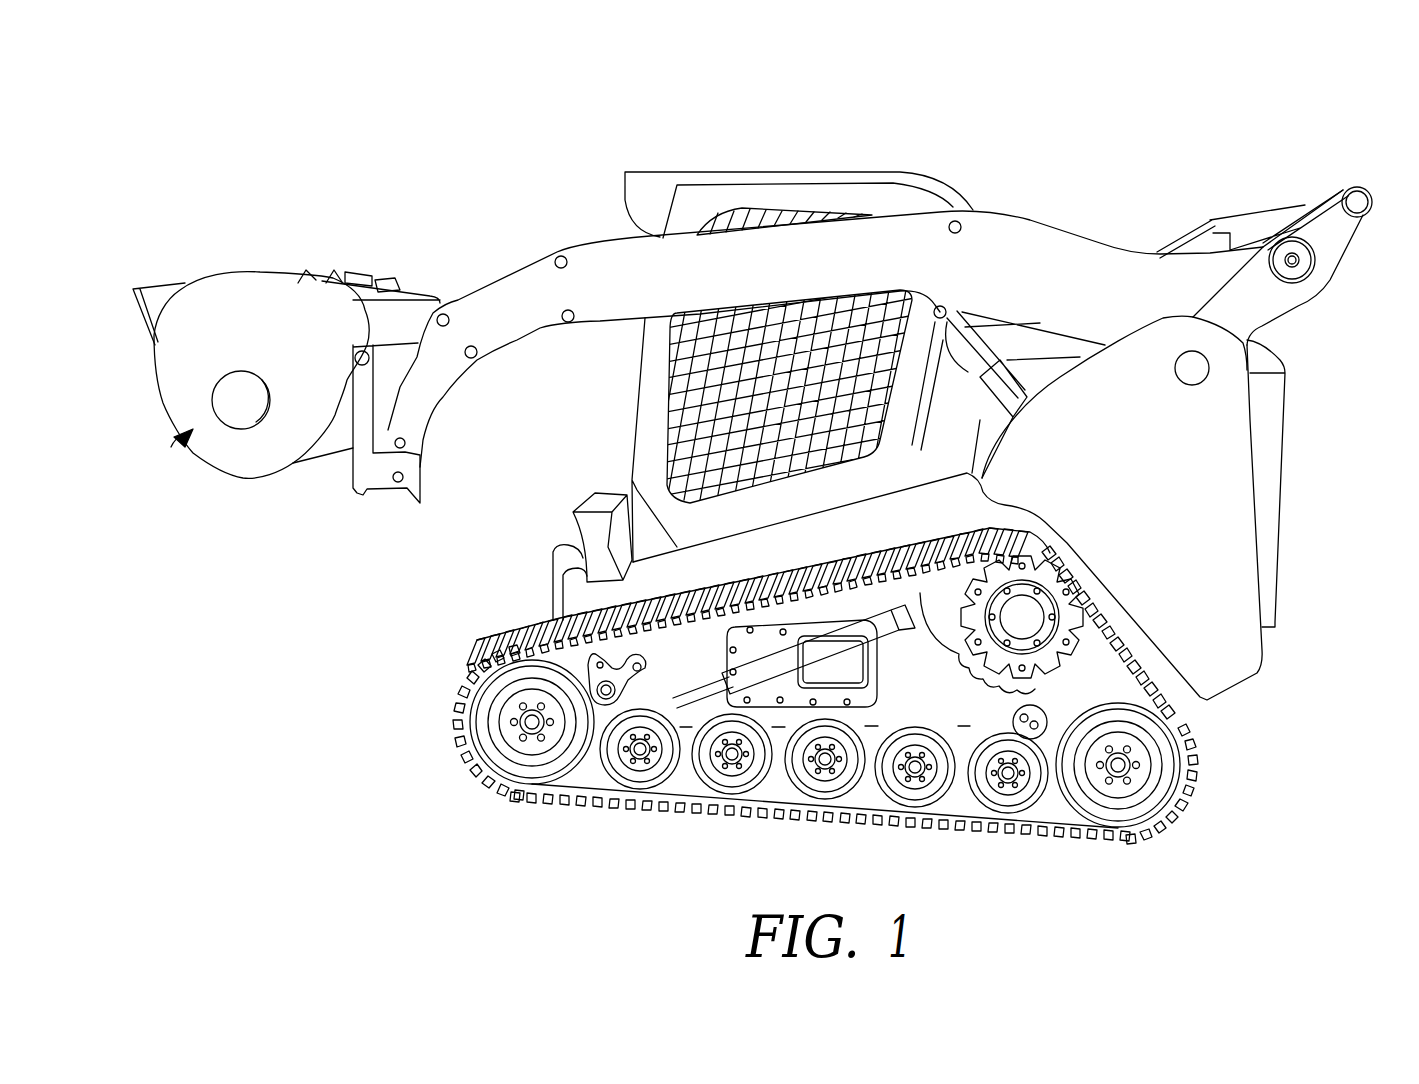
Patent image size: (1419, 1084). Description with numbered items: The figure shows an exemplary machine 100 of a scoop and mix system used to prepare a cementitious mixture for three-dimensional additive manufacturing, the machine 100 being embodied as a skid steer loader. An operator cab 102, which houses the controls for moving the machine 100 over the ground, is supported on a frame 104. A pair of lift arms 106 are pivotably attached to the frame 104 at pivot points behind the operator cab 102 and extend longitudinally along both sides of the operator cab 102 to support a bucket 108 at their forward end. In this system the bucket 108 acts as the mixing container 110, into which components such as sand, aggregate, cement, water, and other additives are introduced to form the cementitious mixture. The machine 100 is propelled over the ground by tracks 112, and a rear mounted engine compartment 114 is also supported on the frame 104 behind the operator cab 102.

The machine 100 is at (1328, 90).
The operator cab 102 is at (792, 216).
The frame 104 is at (580, 602).
The lift arms 106 is at (513, 282).
The bucket 108 is at (173, 365).
The mixing container 110 is at (171, 447).
The tracks 112 is at (462, 722).
The rear mounted engine compartment 114 is at (1273, 447).